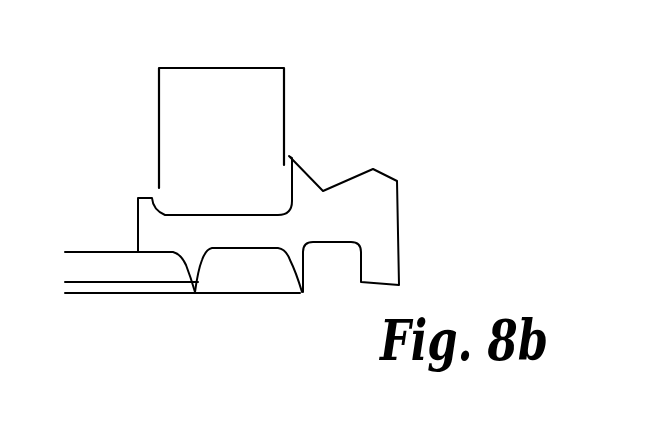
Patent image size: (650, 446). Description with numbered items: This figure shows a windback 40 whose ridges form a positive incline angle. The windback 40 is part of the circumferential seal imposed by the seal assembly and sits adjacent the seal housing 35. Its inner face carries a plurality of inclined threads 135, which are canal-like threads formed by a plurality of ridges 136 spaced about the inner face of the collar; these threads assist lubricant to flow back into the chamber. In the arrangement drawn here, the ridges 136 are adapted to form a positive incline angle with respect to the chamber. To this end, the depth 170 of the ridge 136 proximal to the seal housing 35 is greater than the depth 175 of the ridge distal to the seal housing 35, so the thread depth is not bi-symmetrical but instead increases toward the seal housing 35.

The windback 40 is at (210, 65).
The seal housing 35 is at (377, 185).
The ridge 136 is at (248, 270).
The inclined thread 135 is at (195, 292).
The depth of the ridge proximal to the seal housing 170 is at (72, 318).
The depth of the ridge distal to the seal housing 175 is at (105, 313).